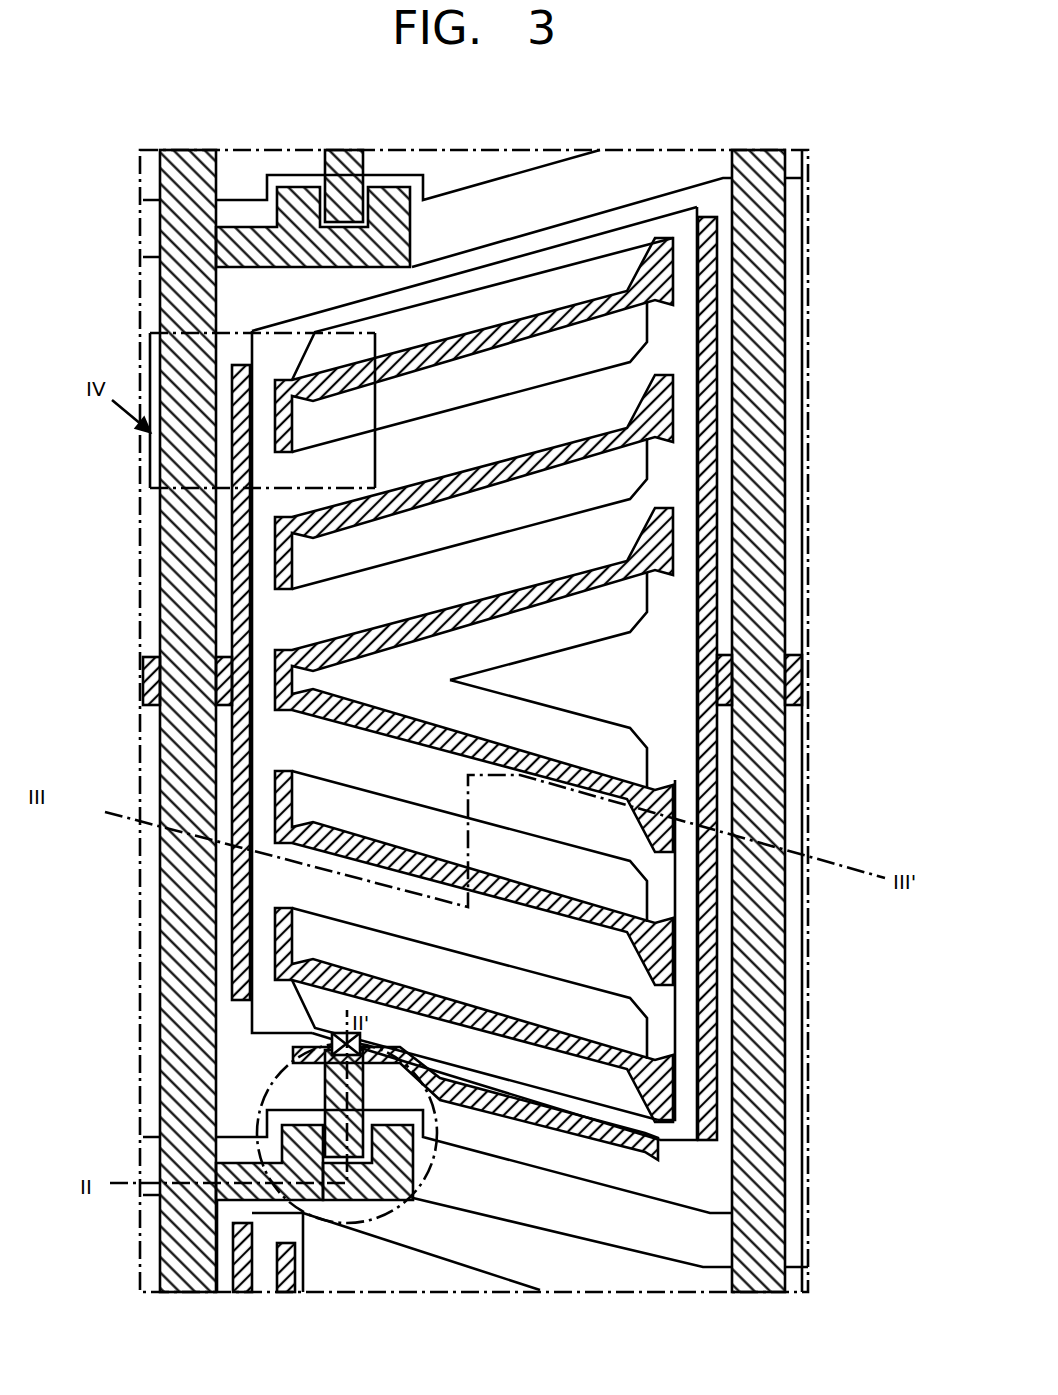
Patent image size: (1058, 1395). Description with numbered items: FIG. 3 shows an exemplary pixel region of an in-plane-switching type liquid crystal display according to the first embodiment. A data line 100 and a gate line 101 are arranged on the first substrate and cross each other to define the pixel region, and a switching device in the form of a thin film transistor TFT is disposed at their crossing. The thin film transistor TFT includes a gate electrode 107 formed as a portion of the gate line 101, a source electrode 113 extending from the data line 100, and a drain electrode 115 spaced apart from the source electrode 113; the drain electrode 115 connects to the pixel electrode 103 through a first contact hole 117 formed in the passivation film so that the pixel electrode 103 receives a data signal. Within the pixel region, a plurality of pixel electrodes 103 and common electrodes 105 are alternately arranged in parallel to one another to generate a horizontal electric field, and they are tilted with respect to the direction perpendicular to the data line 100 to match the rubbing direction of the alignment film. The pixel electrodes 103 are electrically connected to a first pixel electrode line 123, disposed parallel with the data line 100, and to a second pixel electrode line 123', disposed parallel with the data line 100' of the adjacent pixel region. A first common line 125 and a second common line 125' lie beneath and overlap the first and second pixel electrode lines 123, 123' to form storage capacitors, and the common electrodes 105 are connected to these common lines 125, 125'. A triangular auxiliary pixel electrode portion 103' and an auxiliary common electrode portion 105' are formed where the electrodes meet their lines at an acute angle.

The data line 100 is at (141, 721).
The data line of an adjacent pixel region 100' is at (809, 721).
The gate line 101 is at (800, 1240).
The pixel electrode 103 is at (578, 680).
The triangular auxiliary pixel electrode portion 103' is at (590, 1087).
The common electrode 105 is at (548, 720).
The auxiliary common electrode portion 105' is at (552, 1187).
The gate electrode 107 is at (300, 1120).
The source electrode 113 is at (395, 1155).
The drain electrode 115 is at (352, 1150).
The first contact hole 117 is at (330, 1045).
The first pixel electrode line 123 is at (187, 682).
The second pixel electrode line 123' is at (772, 673).
The first common line 125 is at (156, 682).
The second common line 125' is at (792, 678).
The thin film transistor TFT is at (262, 1100).